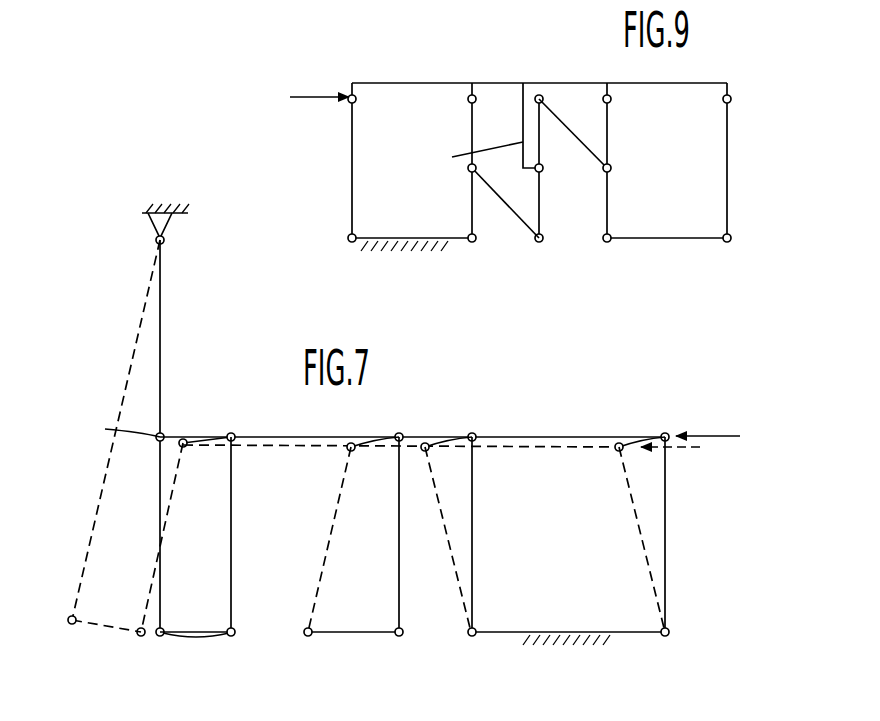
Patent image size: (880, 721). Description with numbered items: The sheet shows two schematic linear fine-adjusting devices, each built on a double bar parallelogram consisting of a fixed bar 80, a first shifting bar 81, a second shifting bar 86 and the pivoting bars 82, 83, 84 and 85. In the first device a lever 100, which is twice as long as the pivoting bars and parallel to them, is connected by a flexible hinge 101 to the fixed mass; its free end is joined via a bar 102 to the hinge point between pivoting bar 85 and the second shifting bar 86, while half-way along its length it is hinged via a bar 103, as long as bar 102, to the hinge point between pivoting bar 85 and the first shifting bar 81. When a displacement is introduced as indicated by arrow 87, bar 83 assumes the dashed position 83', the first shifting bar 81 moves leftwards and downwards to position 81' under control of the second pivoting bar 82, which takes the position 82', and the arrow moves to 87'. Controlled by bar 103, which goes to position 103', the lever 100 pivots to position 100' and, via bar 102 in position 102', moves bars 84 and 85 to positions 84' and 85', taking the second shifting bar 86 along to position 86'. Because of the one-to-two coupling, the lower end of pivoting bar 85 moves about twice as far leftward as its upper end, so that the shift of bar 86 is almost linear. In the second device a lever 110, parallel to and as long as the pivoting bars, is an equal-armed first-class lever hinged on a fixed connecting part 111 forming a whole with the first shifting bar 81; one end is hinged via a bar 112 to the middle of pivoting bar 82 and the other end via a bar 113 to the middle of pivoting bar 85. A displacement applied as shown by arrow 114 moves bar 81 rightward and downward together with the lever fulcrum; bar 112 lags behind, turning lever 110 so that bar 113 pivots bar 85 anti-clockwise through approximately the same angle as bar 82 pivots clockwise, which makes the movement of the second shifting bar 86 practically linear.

In FIG. 9, the fixed bar 80 is at (366, 242).
In FIG. 7, the fixed bar 80 is at (506, 637).
In FIG. 9, the first shifting bar 81 is at (539, 60).
In FIG. 7, the first shifting bar 81 is at (414, 417).
In FIG. 7, the displaced position of first shifting bar 81' is at (424, 422).
In FIG. 9, the second pivoting bar 82 is at (453, 160).
In FIG. 7, the second pivoting bar 82 is at (493, 534).
In FIG. 7, the displaced position of second pivoting bar 82' is at (447, 539).
In FIG. 9, the pivoting bar 83 is at (334, 160).
In FIG. 7, the pivoting bar 83 is at (687, 534).
In FIG. 7, the displaced position of pivoting bar 83' is at (631, 539).
In FIG. 9, the pivoting bar 84 is at (711, 160).
In FIG. 7, the pivoting bar 84 is at (375, 534).
In FIG. 7, the displaced position of pivoting bar 84' is at (325, 539).
In FIG. 9, the pivoting bar 85 is at (626, 160).
In FIG. 7, the pivoting bar 85 is at (256, 534).
In FIG. 7, the displaced position of pivoting bar 85' is at (182, 537).
In FIG. 9, the second shifting bar 86 is at (667, 259).
In FIG. 7, the second shifting bar 86 is at (353, 655).
In FIG. 7, the displaced position of second shifting bar 86' is at (154, 655).
In FIG. 7, the arrow 87 is at (708, 420).
In FIG. 7, the arrow in displaced position 87' is at (675, 462).
In FIG. 7, the lever 100 is at (185, 438).
In FIG. 7, the displaced position of lever 100' is at (116, 430).
In FIG. 7, the flexible hinge 101 is at (166, 240).
In FIG. 7, the bar 102 is at (197, 655).
In FIG. 7, the displaced position of bar 102' is at (104, 649).
In FIG. 7, the bar 103 is at (168, 414).
In FIG. 7, the displaced position of bar 103' is at (113, 461).
In FIG. 9, the lever 110 is at (541, 205).
In FIG. 9, the fixed connecting part 111 is at (480, 127).
In FIG. 9, the bar 112 is at (507, 205).
In FIG. 9, the bar 113 is at (561, 120).
In FIG. 9, the arrow 114 is at (319, 84).